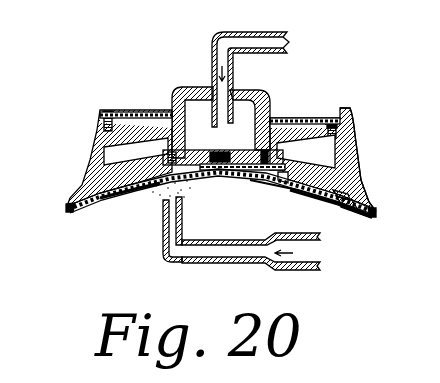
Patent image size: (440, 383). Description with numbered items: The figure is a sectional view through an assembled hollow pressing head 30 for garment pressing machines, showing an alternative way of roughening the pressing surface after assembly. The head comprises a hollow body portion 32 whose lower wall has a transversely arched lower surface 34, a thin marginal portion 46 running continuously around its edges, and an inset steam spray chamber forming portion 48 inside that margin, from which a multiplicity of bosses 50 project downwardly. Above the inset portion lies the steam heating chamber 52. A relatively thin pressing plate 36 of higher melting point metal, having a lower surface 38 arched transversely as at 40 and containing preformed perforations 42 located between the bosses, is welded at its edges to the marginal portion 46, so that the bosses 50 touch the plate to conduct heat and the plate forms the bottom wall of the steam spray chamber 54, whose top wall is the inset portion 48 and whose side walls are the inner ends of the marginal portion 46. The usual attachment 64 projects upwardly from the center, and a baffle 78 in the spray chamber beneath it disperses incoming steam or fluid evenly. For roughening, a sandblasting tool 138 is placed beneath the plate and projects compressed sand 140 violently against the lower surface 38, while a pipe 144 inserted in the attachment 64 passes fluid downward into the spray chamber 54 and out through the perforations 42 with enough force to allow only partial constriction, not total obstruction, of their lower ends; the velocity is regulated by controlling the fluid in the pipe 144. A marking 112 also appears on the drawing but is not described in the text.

The hollow pressing head 30 is at (357, 125).
The hollow body portion 32 is at (352, 143).
The transversely arched lower surface 34 is at (341, 205).
The pressing plate 36 is at (358, 210).
The lower surface 38 is at (352, 214).
The transversely arched portion 40 is at (233, 180).
The perforations 42 is at (280, 192).
The marginal portion 46 is at (88, 203).
The inset steam spray chamber forming portion 48 is at (345, 193).
The bosses 50 is at (133, 193).
The steam heating chamber 52 is at (137, 152).
The steam spray chamber 54 is at (277, 175).
The attachment 64 is at (260, 92).
The baffle 78 is at (210, 180).
The edge 112 is at (67, 208).
The sandblasting tool 138 is at (289, 270).
The sand 140 is at (158, 197).
The pipe 144 is at (238, 32).